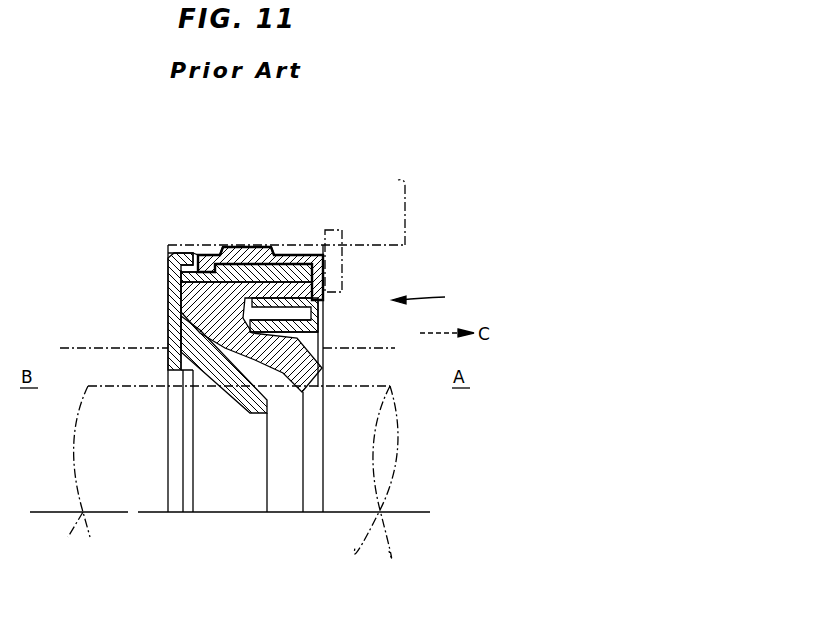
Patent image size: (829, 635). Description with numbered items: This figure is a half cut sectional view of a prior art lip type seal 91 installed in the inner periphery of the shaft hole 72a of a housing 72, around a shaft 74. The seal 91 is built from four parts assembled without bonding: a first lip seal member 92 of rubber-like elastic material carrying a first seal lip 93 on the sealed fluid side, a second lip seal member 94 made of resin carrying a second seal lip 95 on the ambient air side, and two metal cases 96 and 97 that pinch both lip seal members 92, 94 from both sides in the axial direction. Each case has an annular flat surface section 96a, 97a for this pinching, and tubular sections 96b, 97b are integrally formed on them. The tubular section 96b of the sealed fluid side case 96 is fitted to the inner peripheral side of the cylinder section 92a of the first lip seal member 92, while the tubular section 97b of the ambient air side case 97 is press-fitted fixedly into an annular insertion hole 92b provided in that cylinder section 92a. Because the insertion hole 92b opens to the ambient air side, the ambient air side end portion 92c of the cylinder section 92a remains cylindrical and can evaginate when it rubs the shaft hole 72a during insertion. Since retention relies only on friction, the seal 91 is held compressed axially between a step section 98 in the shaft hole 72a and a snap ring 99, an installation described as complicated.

The housing 72 is at (403, 198).
The shaft hole 72a is at (397, 257).
The shaft 74 is at (338, 498).
The lip type seal 91 is at (430, 293).
The first lip seal member 92 is at (304, 257).
The cylinder section 92a is at (263, 253).
The insertion hole 92b is at (242, 254).
The ambient air side end portion 92c is at (177, 252).
The first seal lip 93 is at (322, 370).
The second lip seal member 94 is at (203, 362).
The second seal lip 95 is at (243, 406).
The case 96 is at (340, 300).
The annular flat surface section 96a is at (325, 263).
The tubular section 96b is at (298, 323).
The case 97 is at (178, 292).
The annular flat surface section 97a is at (172, 336).
The tubular section 97b is at (215, 262).
The step section 98 is at (178, 263).
The snap ring 99 is at (337, 276).